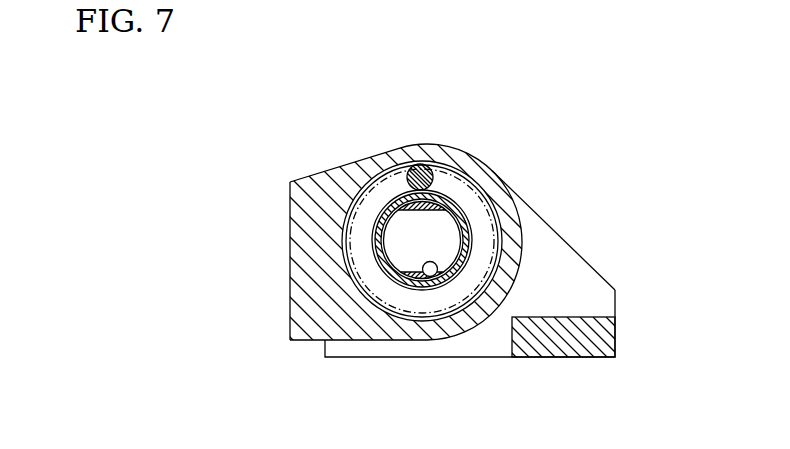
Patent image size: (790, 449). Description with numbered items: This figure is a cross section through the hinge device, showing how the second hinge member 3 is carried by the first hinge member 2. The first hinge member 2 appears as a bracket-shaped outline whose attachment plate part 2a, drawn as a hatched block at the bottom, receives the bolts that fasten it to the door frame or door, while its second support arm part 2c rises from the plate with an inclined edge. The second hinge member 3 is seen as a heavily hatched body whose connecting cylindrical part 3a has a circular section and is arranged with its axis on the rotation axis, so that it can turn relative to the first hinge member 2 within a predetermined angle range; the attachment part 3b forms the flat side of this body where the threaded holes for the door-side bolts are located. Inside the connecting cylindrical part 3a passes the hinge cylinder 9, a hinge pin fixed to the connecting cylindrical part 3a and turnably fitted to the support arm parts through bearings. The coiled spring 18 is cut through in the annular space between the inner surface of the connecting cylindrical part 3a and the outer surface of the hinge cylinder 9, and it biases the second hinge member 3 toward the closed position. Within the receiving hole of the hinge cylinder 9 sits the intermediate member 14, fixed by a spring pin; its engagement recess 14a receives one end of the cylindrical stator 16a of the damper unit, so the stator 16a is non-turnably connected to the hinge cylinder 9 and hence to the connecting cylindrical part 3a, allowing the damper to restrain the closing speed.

The first hinge member 2 is at (600, 261).
The attachment plate part 2a is at (542, 346).
The second support arm part 2c is at (558, 255).
The second hinge member 3 is at (282, 203).
The connecting cylindrical part 3a is at (473, 165).
The attachment part 3b is at (289, 296).
The hinge cylinder 9 is at (405, 283).
The intermediate member 14 is at (423, 278).
The engagement recess 14a is at (431, 271).
The stator 16a is at (394, 228).
The coiled spring 18 is at (420, 170).